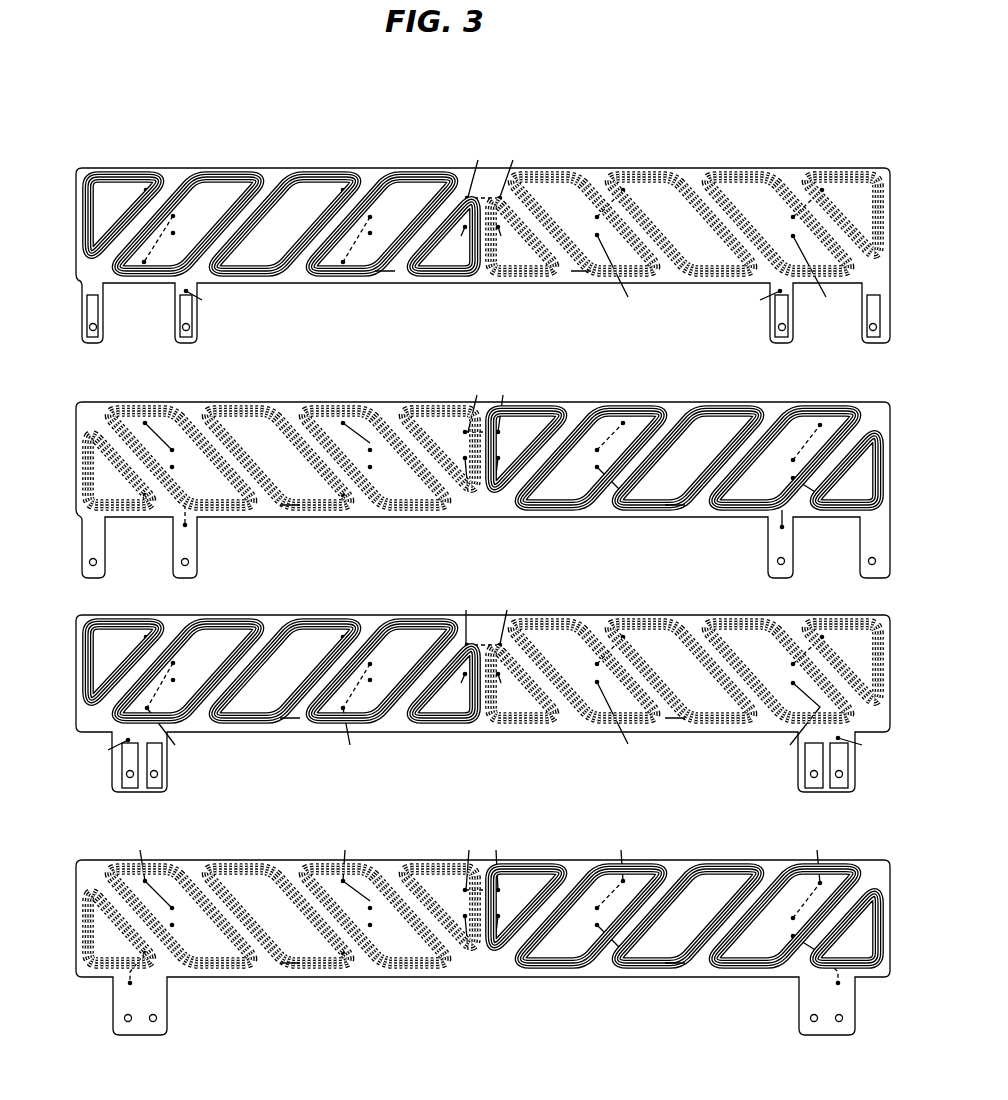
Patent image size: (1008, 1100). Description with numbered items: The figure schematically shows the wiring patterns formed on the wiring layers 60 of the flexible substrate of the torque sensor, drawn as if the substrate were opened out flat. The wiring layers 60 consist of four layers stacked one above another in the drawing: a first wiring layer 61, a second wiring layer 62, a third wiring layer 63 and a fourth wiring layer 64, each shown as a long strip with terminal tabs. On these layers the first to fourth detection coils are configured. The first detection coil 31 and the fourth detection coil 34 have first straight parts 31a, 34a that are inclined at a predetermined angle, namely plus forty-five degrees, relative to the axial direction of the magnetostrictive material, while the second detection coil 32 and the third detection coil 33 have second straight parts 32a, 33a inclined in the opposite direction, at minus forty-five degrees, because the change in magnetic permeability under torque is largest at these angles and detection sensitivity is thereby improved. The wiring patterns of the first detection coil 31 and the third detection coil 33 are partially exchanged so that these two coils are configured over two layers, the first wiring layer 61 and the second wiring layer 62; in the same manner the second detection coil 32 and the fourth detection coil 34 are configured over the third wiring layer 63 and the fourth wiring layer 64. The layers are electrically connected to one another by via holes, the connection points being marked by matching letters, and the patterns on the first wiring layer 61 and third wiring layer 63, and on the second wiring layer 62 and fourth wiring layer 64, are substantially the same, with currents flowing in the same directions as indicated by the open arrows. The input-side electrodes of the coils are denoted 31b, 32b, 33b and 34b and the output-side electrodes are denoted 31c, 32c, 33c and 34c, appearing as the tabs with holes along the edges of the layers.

The wiring layers 60 is at (90, 140).
The first wiring layer 61 is at (70, 166).
The second wiring layer 62 is at (70, 412).
The third wiring layer 63 is at (70, 614).
The fourth wiring layer 64 is at (70, 858).
The first detection coil 31 is at (163, 171).
The first straight part 31a is at (400, 275).
The input-side electrode 31b is at (99, 338).
The output-side electrode 31c is at (774, 338).
The third detection coil 33 is at (801, 171).
The second straight part 33a is at (585, 275).
The input-side electrode 33b is at (193, 338).
The output-side electrode 33c is at (866, 338).
The second detection coil 32 is at (583, 616).
The second straight part 32a is at (680, 619).
The input-side electrode 32b is at (127, 778).
The output-side electrode 32c is at (813, 773).
The fourth detection coil 34 is at (387, 616).
The first straight part 34a is at (287, 623).
The input-side electrode 34b is at (162, 778).
The output-side electrode 34c is at (852, 773).